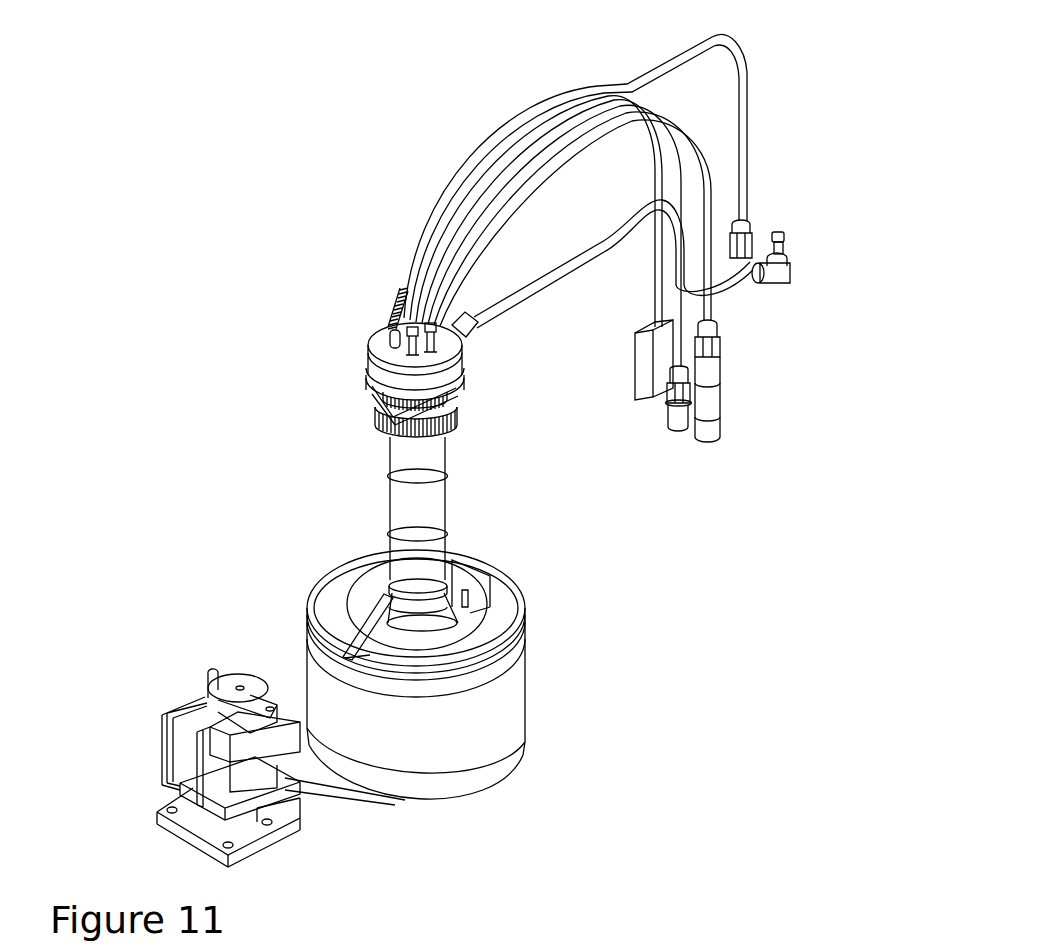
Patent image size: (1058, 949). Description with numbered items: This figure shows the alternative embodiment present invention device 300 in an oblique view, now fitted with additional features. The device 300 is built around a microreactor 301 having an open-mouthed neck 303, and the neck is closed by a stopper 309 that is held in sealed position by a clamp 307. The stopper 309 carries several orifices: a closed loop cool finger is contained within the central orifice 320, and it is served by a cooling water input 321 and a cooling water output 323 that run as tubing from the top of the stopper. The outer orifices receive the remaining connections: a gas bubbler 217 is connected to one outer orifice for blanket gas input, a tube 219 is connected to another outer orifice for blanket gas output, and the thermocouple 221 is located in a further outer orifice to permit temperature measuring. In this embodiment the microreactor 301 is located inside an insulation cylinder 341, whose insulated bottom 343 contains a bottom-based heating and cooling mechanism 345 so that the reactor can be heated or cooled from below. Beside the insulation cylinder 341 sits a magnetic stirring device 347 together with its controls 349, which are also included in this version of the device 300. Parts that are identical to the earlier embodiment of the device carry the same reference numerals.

The device 300 is at (333, 548).
The microreactor 301 is at (487, 612).
The open-mouthed neck 303 is at (388, 480).
The clamp 307 is at (372, 392).
The stopper 309 is at (378, 355).
The central orifice 320 is at (400, 331).
The cooling water input 321 is at (752, 118).
The tube 219 is at (712, 190).
The thermocouple 221 is at (657, 184).
The cooling water output 323 is at (738, 297).
The gas bubbler 217 is at (717, 368).
The insulation cylinder 341 is at (530, 726).
The insulated bottom 343 is at (522, 770).
The bottom-based heating and cooling mechanism 345 is at (420, 808).
The magnetic stirring device 347 is at (203, 740).
The controls 349 is at (217, 693).